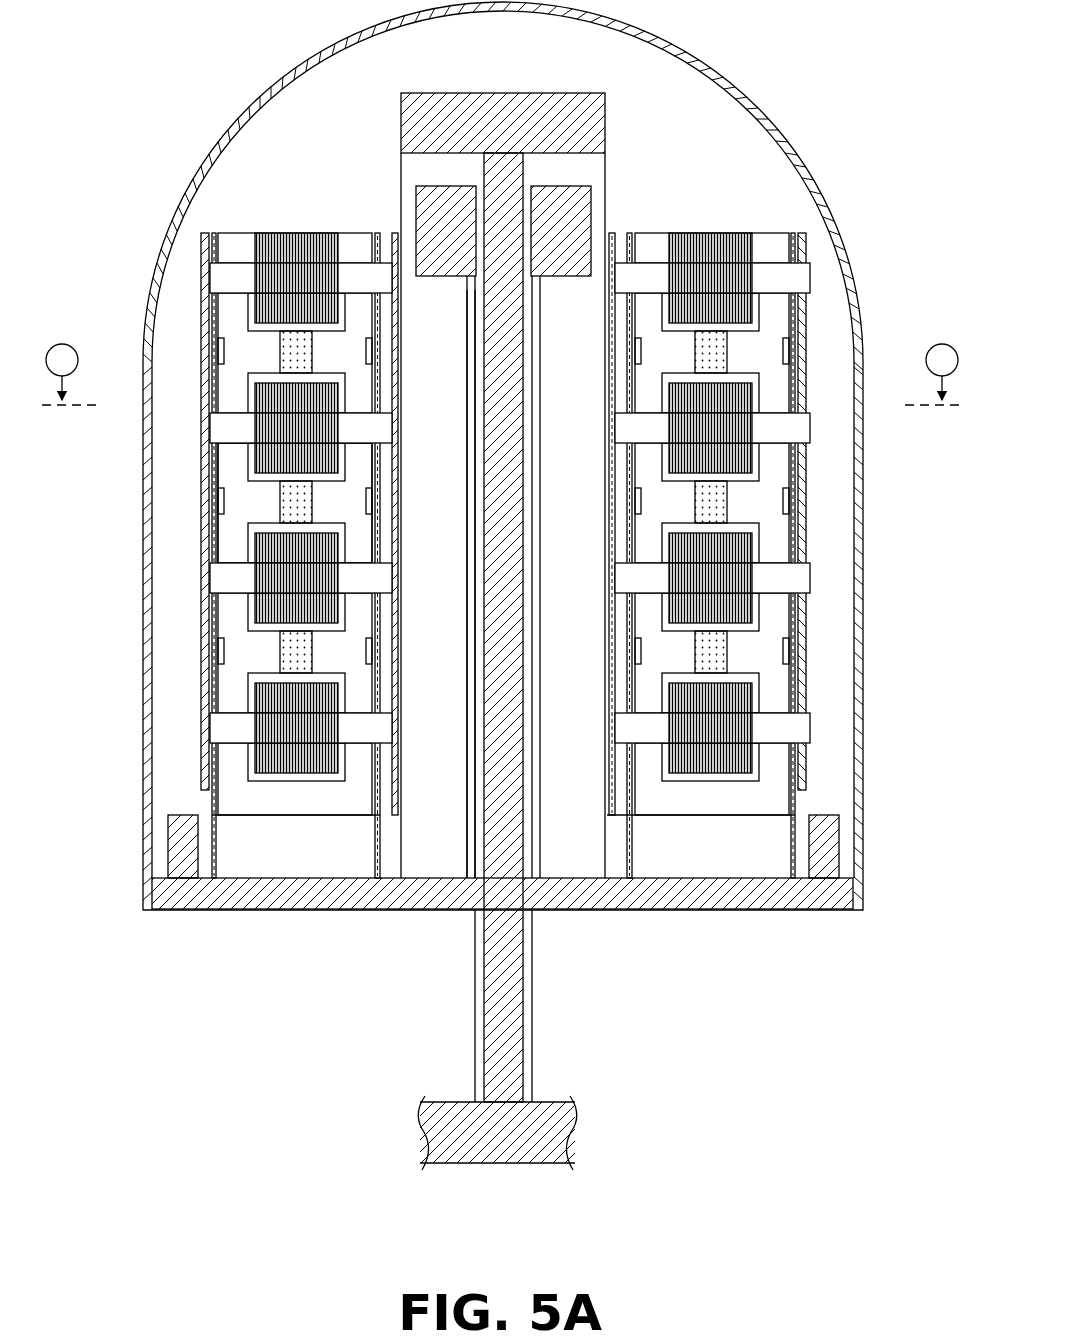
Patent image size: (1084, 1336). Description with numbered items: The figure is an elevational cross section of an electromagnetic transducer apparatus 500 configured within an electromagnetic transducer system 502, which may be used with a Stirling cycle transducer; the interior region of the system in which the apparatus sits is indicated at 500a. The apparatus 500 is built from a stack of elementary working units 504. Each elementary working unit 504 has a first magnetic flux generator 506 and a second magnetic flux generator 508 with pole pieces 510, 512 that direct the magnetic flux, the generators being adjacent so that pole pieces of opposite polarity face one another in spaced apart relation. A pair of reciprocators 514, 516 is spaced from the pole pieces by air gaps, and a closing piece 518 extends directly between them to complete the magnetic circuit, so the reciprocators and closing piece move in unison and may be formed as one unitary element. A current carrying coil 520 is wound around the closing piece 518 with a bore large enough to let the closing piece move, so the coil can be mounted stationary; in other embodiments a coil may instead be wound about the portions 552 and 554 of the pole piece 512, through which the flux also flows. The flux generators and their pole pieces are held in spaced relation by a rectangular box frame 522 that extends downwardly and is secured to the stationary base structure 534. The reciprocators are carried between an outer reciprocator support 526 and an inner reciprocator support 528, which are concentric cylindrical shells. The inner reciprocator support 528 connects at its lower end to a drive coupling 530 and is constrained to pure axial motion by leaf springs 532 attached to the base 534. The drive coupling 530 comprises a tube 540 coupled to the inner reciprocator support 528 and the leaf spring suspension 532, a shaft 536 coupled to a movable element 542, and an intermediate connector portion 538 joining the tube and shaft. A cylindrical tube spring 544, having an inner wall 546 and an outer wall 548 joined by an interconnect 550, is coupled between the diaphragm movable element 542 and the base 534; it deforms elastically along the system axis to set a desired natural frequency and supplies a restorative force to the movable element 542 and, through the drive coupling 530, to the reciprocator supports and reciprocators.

The electromagnetic transducer apparatus 500 is at (262, 168).
The interior chamber 500a is at (739, 167).
The electromagnetic transducer system 502 is at (746, 56).
The elementary working unit 504 is at (132, 340).
The first magnetic flux generator 506 is at (280, 354).
The second magnetic flux generator 508 is at (279, 504).
The pole piece 510 is at (228, 518).
The pole piece 512 is at (295, 503).
The reciprocator 514 is at (256, 424).
The reciprocator 516 is at (371, 430).
The closing piece 518 is at (307, 524).
The current carrying coil 520 is at (258, 398).
The frame 522 is at (372, 233).
The outer reciprocator support 526 is at (208, 233).
The inner reciprocator support 528 is at (394, 233).
The drive coupling 530 is at (482, 74).
The leaf springs 532 is at (258, 817).
The base structure 534 is at (176, 893).
The shaft 536 is at (490, 163).
The intermediate connector portion 538 is at (402, 120).
The tube 540 is at (402, 175).
The movable element 542 is at (442, 1132).
The cylindrical tube spring 544 is at (392, 930).
The inner wall 546 is at (475, 985).
The outer wall 548 is at (466, 848).
The interconnect 550 is at (584, 207).
The pole piece portion 552 is at (362, 466).
The pole piece portion 554 is at (362, 538).